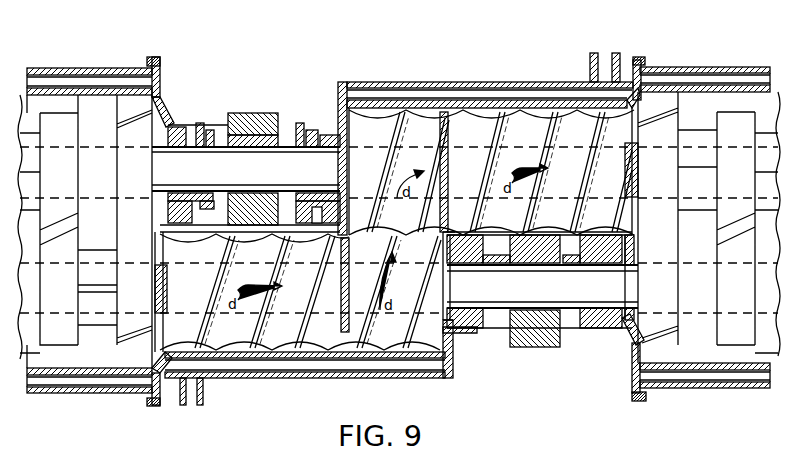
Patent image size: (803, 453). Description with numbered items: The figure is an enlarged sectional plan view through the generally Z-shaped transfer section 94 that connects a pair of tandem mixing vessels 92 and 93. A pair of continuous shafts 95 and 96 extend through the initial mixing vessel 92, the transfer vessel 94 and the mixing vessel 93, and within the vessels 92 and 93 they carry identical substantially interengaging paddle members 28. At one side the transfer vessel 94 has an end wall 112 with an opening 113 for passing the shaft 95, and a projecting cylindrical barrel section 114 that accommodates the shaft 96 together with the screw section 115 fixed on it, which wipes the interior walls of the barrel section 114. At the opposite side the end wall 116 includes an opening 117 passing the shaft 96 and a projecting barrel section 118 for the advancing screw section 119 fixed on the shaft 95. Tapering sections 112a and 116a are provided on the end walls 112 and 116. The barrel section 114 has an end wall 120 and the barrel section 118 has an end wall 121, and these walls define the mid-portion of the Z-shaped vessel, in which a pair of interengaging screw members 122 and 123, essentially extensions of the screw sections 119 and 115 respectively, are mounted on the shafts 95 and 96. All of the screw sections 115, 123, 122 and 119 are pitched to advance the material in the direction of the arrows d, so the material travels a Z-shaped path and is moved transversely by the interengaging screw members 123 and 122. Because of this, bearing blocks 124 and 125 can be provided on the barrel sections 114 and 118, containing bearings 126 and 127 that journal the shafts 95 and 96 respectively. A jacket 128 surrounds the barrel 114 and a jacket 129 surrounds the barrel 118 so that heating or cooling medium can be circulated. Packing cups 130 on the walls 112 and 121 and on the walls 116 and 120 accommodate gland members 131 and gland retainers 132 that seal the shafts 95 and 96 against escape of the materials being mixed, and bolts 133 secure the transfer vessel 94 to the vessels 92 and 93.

The paddle members 28 is at (60, 122).
The mixing vessel 92 is at (95, 60).
The mixing vessel 93 is at (667, 57).
The transfer section 94 is at (438, 78).
The shaft 95 is at (262, 176).
The shaft 96 is at (505, 300).
The end wall 112 is at (177, 98).
The tapering section 112a is at (168, 108).
The opening 113 is at (158, 152).
The barrel section 114 is at (262, 362).
The screw section 115 is at (283, 352).
The end wall 116 is at (633, 55).
The tapering section 116a is at (630, 367).
The opening 117 is at (625, 338).
The barrel section 118 is at (483, 83).
The screw section 119 is at (523, 80).
The end wall 120 is at (455, 380).
The end wall 121 is at (338, 82).
The screw member 122 is at (377, 127).
The screw member 123 is at (378, 343).
The bearing block 124 is at (271, 112).
The bearing block 125 is at (555, 348).
The bearing 126 is at (281, 121).
The bearing 127 is at (540, 348).
The jacket 128 is at (240, 378).
The jacket 129 is at (542, 92).
The packing cups 130 is at (197, 118).
The gland members 131 is at (192, 125).
The gland retainers 132 is at (203, 230).
The bolts 133 is at (145, 58).